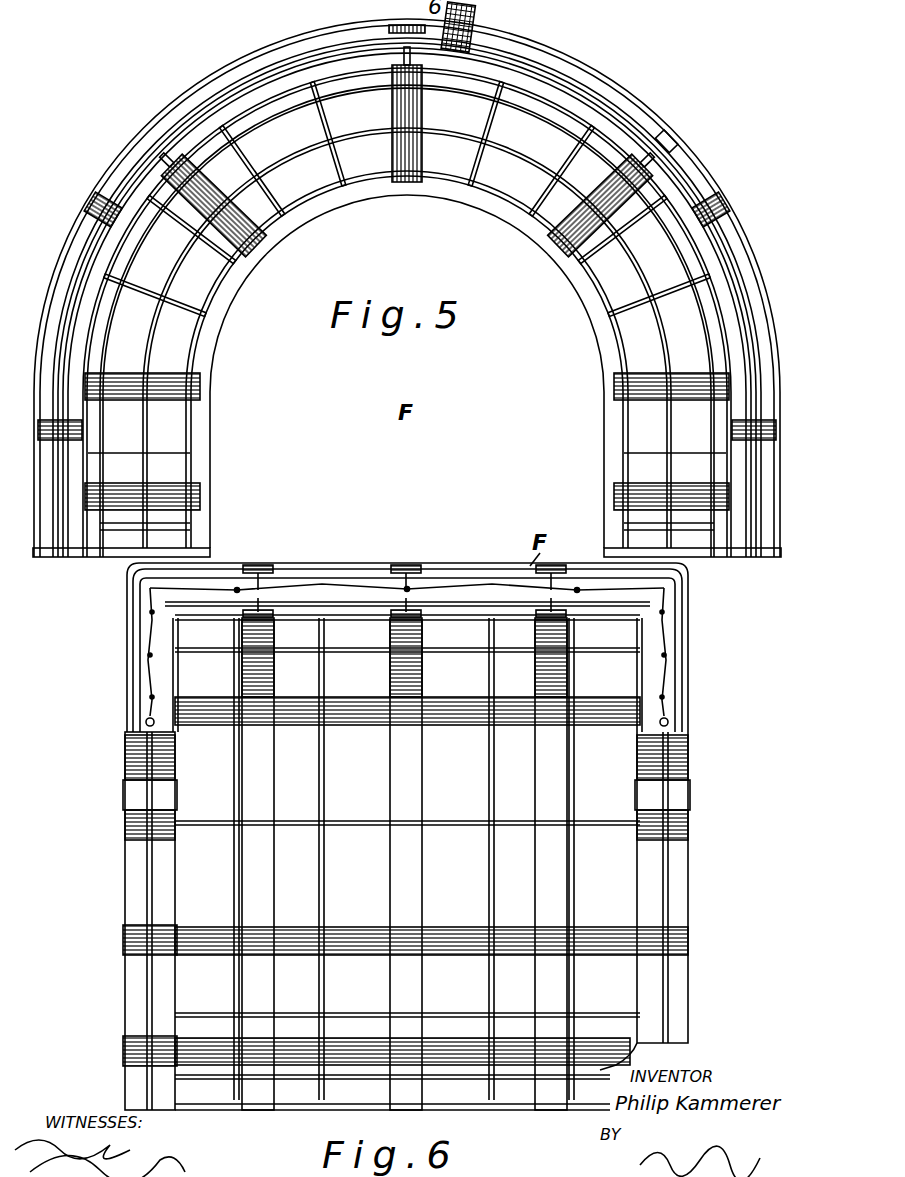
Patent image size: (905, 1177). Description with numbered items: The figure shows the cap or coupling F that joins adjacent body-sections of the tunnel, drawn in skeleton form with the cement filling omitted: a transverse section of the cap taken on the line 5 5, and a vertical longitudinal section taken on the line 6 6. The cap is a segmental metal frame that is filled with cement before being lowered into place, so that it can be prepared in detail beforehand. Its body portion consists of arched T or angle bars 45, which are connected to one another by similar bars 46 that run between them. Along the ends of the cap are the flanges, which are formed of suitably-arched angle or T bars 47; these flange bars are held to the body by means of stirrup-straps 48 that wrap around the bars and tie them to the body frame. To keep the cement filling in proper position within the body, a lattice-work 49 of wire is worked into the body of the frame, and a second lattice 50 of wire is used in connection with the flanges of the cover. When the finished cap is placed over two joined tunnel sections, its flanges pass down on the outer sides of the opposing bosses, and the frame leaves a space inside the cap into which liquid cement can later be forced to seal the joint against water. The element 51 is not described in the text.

In FIG. 6, the section line 5 5 is at (427, 563).
In FIG. 5, the section line 6 6 is at (428, 200).
In FIG. 5, the arched T or angle bars 45 is at (396, 18).
In FIG. 6, the arched T or angle bars 45 is at (258, 566).
In FIG. 5, the connecting bars 46 is at (297, 103).
In FIG. 6, the connecting bars 46 is at (375, 710).
In FIG. 5, the arched angle or T bars 47 is at (68, 243).
In FIG. 6, the arched angle or T bars 47 is at (126, 876).
In FIG. 5, the stirrup-straps 48 is at (96, 205).
In FIG. 6, the stirrup-straps 48 is at (690, 791).
In FIG. 5, the lattice-work of wire 49 is at (146, 358).
In FIG. 6, the lattice-work of wire 49 is at (366, 640).
In FIG. 5, the lattice of wire 50 is at (70, 291).
In FIG. 6, the lattice of wire 50 is at (113, 698).
In FIG. 5, the block 51 is at (482, 27).